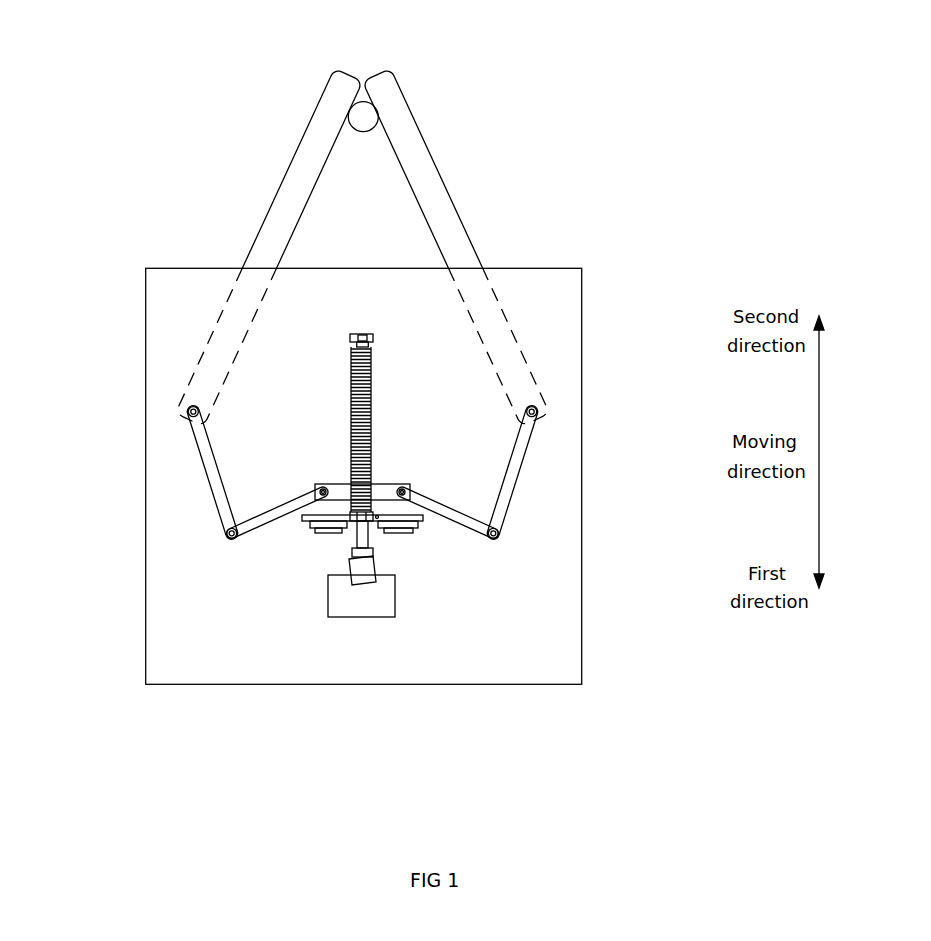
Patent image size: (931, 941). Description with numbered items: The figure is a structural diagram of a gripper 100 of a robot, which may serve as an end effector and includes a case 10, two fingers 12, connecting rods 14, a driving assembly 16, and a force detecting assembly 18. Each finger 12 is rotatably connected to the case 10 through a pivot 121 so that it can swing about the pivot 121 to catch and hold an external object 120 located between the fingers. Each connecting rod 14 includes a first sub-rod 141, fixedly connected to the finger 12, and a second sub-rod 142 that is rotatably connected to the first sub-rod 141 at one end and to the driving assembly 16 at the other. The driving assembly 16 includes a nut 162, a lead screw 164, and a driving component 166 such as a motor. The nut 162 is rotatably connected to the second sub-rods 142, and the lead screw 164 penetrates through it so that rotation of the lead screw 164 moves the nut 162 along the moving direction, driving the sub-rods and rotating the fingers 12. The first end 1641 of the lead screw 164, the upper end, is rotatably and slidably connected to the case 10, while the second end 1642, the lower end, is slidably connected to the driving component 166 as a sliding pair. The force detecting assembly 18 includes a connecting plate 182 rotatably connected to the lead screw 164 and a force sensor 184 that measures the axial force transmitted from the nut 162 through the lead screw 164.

The gripper 100 is at (173, 116).
The case 10 is at (178, 638).
The finger 12 is at (442, 200).
The external object 120 is at (365, 112).
The pivot 121 is at (191, 408).
The connecting rod 14 is at (293, 474).
The first sub-rod 141 is at (217, 472).
The second sub-rod 142 is at (240, 497).
The driving assembly 16 is at (494, 468).
The nut 162 is at (410, 487).
The lead screw 164 is at (372, 393).
The first end of the lead screw 1641 is at (373, 333).
The second end of the lead screw 1642 is at (357, 570).
The driving component 166 is at (380, 600).
The force detecting assembly 18 is at (301, 651).
The connecting plate 182 is at (302, 520).
The force sensor 184 is at (325, 533).